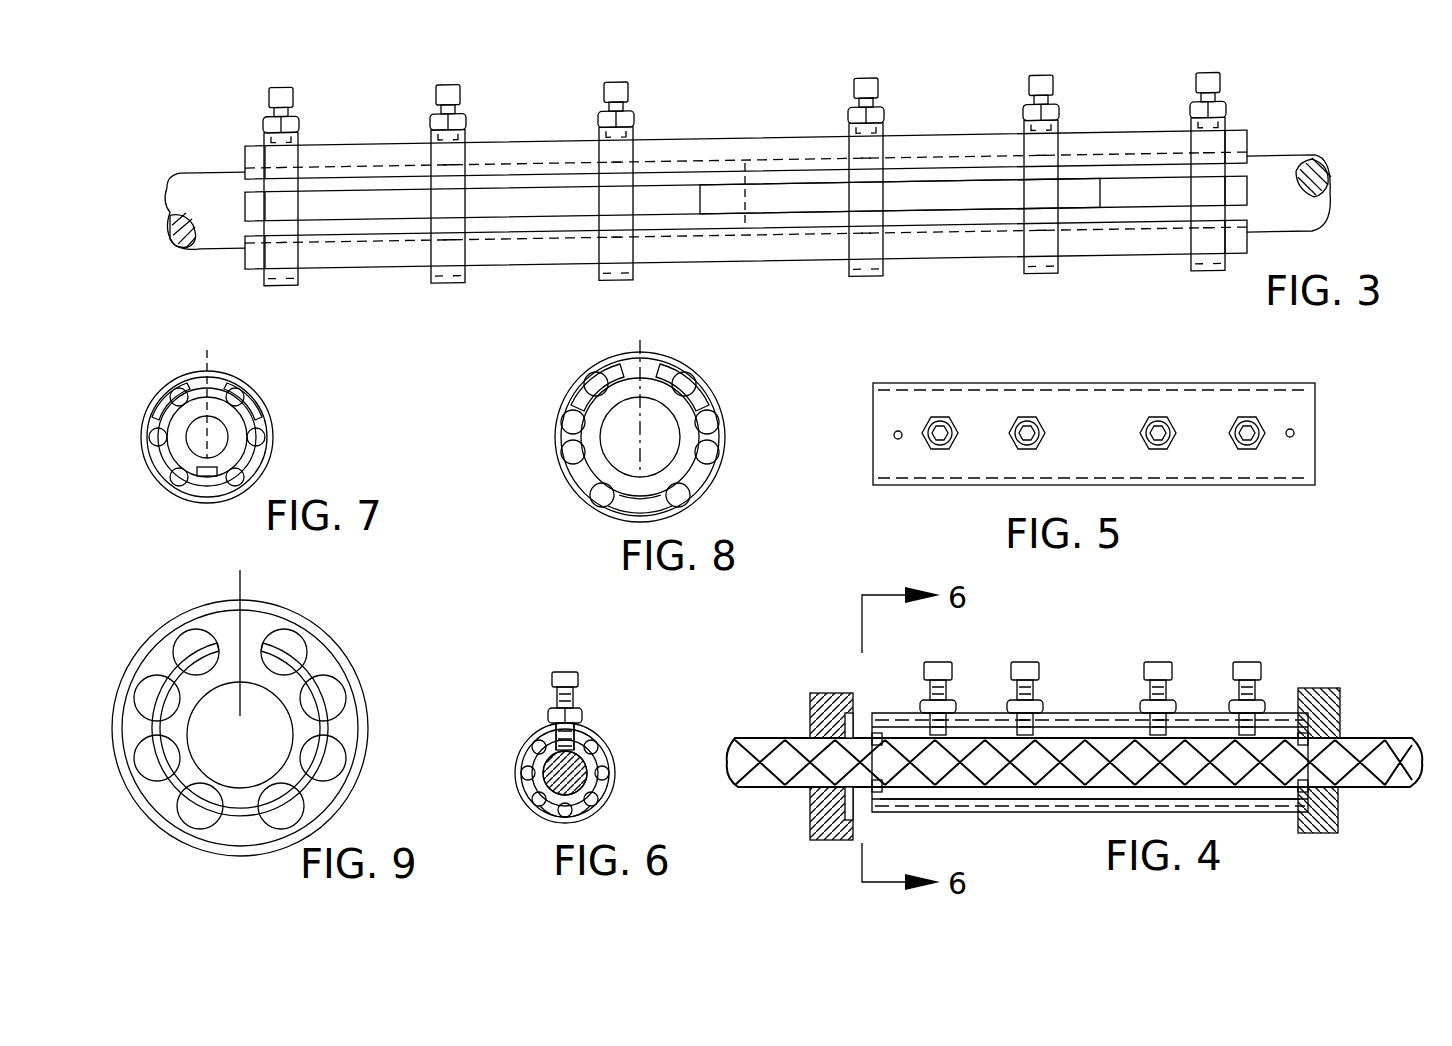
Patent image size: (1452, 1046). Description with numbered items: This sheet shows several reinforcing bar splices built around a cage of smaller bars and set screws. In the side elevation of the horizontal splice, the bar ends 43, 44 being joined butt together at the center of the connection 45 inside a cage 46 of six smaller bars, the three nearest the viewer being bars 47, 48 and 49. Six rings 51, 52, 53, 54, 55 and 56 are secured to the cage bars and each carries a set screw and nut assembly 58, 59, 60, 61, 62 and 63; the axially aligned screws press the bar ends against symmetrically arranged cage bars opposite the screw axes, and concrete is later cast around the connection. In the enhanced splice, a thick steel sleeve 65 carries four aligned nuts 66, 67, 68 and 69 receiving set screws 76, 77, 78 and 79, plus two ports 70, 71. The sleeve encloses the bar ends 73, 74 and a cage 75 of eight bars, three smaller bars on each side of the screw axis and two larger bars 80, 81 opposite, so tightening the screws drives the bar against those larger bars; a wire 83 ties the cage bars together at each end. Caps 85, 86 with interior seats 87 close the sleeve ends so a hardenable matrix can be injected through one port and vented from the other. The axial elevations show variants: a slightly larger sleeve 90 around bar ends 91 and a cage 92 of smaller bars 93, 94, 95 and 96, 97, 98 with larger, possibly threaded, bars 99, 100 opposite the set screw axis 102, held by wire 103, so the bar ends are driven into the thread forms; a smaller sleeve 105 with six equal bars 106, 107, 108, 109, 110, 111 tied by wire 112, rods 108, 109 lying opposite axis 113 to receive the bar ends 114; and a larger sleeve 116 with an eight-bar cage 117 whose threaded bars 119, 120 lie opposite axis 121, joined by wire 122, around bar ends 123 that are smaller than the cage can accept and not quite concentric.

In FIG. 3, the bar end 43 is at (212, 190).
In FIG. 3, the bar end 44 is at (1284, 172).
In FIG. 3, the center of the connection 45 is at (745, 225).
In FIG. 3, the cage 46 is at (746, 154).
In FIG. 3, the cage bar 47 is at (746, 198).
In FIG. 3, the cage bar 48 is at (1118, 195).
In FIG. 3, the cage bar 49 is at (746, 244).
In FIG. 3, the ring 51 is at (284, 265).
In FIG. 3, the ring 52 is at (447, 258).
In FIG. 3, the ring 53 is at (616, 255).
In FIG. 3, the ring 54 is at (866, 252).
In FIG. 3, the ring 55 is at (1041, 260).
In FIG. 3, the ring 56 is at (1208, 268).
In FIG. 3, the set screw and nut assembly 58 is at (294, 98).
In FIG. 3, the set screw and nut assembly 59 is at (461, 95).
In FIG. 3, the set screw and nut assembly 60 is at (629, 92).
In FIG. 3, the set screw and nut assembly 61 is at (880, 88).
In FIG. 3, the set screw and nut assembly 62 is at (1055, 80).
In FIG. 3, the set screw and nut assembly 63 is at (1222, 78).
In FIG. 5, the sleeve 65 is at (1231, 377).
In FIG. 6, the sleeve 65 is at (609, 739).
In FIG. 4, the sleeve 65 is at (1091, 704).
In FIG. 5, the nut 66 is at (940, 452).
In FIG. 6, the nut 66 is at (582, 715).
In FIG. 4, the nut 66 is at (920, 706).
In FIG. 5, the nut 67 is at (1030, 415).
In FIG. 4, the nut 67 is at (1044, 706).
In FIG. 5, the nut 68 is at (1158, 452).
In FIG. 4, the nut 68 is at (1177, 706).
In FIG. 5, the nut 69 is at (1247, 452).
In FIG. 4, the nut 69 is at (1266, 706).
In FIG. 5, the port 70 is at (900, 430).
In FIG. 5, the port 71 is at (1295, 434).
In FIG. 6, the bar end 73 is at (570, 776).
In FIG. 4, the bar end 73 is at (781, 740).
In FIG. 4, the bar end 74 is at (1380, 737).
In FIG. 6, the cage 75 is at (552, 816).
In FIG. 6, the set screw 76 is at (578, 680).
In FIG. 4, the set screw 76 is at (952, 669).
In FIG. 4, the set screw 77 is at (1040, 669).
In FIG. 4, the set screw 78 is at (1172, 669).
In FIG. 4, the set screw 79 is at (1262, 669).
In FIG. 6, the larger bar 80 is at (535, 807).
In FIG. 4, the larger bar 80 is at (1080, 812).
In FIG. 6, the larger bar 81 is at (593, 806).
In FIG. 6, the wire 83 is at (541, 746).
In FIG. 4, the wire 83 is at (1310, 722).
In FIG. 4, the cap 85 is at (830, 693).
In FIG. 4, the cap 86 is at (1340, 810).
In FIG. 4, the interior seat 87 is at (852, 716).
In FIG. 8, the sleeve 90 is at (672, 358).
In FIG. 8, the bar ends 91 is at (660, 416).
In FIG. 8, the cage 92 is at (574, 400).
In FIG. 8, the smaller bar 93 is at (601, 381).
In FIG. 8, the smaller bar 94 is at (562, 420).
In FIG. 8, the smaller bar 95 is at (562, 455).
In FIG. 8, the smaller bar 96 is at (690, 381).
In FIG. 8, the smaller bar 97 is at (712, 436).
In FIG. 8, the smaller bar 98 is at (715, 464).
In FIG. 8, the larger bar 99 is at (602, 503).
In FIG. 8, the larger bar 100 is at (672, 497).
In FIG. 8, the axis of the set screws 102 is at (648, 342).
In FIG. 8, the wire 103 is at (592, 483).
In FIG. 7, the sleeve 105 is at (268, 410).
In FIG. 7, the cage bar 106 is at (180, 387).
In FIG. 7, the cage bar 107 is at (158, 442).
In FIG. 7, the rod 108 is at (186, 489).
In FIG. 7, the rod 109 is at (264, 476).
In FIG. 7, the cage bar 110 is at (267, 441).
In FIG. 7, the cage bar 111 is at (250, 393).
In FIG. 7, the wire 112 is at (173, 480).
In FIG. 7, the axis 113 is at (212, 364).
In FIG. 7, the bar ends 114 is at (196, 432).
In FIG. 9, the sleeve 116 is at (332, 624).
In FIG. 9, the cage 117 is at (348, 679).
In FIG. 9, the threaded bar 119 is at (196, 816).
In FIG. 9, the threaded bar 120 is at (295, 806).
In FIG. 9, the axis of the set screws 121 is at (246, 630).
In FIG. 9, the wire 122 is at (246, 813).
In FIG. 9, the bar ends 123 is at (200, 738).